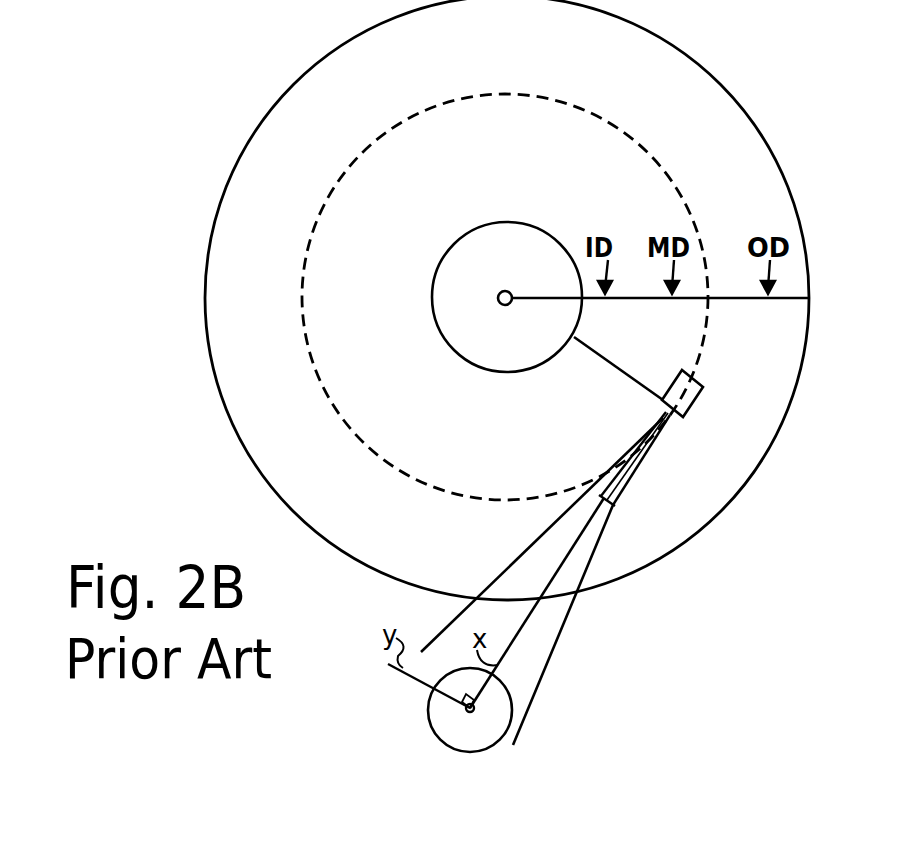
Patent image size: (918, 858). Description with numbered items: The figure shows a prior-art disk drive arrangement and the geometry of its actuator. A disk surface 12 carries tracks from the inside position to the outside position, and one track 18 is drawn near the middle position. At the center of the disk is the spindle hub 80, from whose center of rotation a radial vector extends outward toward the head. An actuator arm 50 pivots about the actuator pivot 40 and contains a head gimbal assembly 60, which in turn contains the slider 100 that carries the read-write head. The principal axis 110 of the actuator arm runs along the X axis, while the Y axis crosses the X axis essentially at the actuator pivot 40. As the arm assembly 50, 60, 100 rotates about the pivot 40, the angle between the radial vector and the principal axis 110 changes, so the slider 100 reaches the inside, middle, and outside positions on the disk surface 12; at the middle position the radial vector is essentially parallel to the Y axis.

The disk surface 12 is at (204, 258).
The track 18 is at (680, 192).
The actuator pivot 40 is at (433, 729).
The actuator arm 50 is at (596, 568).
The head gimbal assembly 60 is at (641, 463).
The spindle hub 80 is at (534, 276).
The slider 100 is at (699, 404).
The actuator principal axis 110 is at (547, 583).